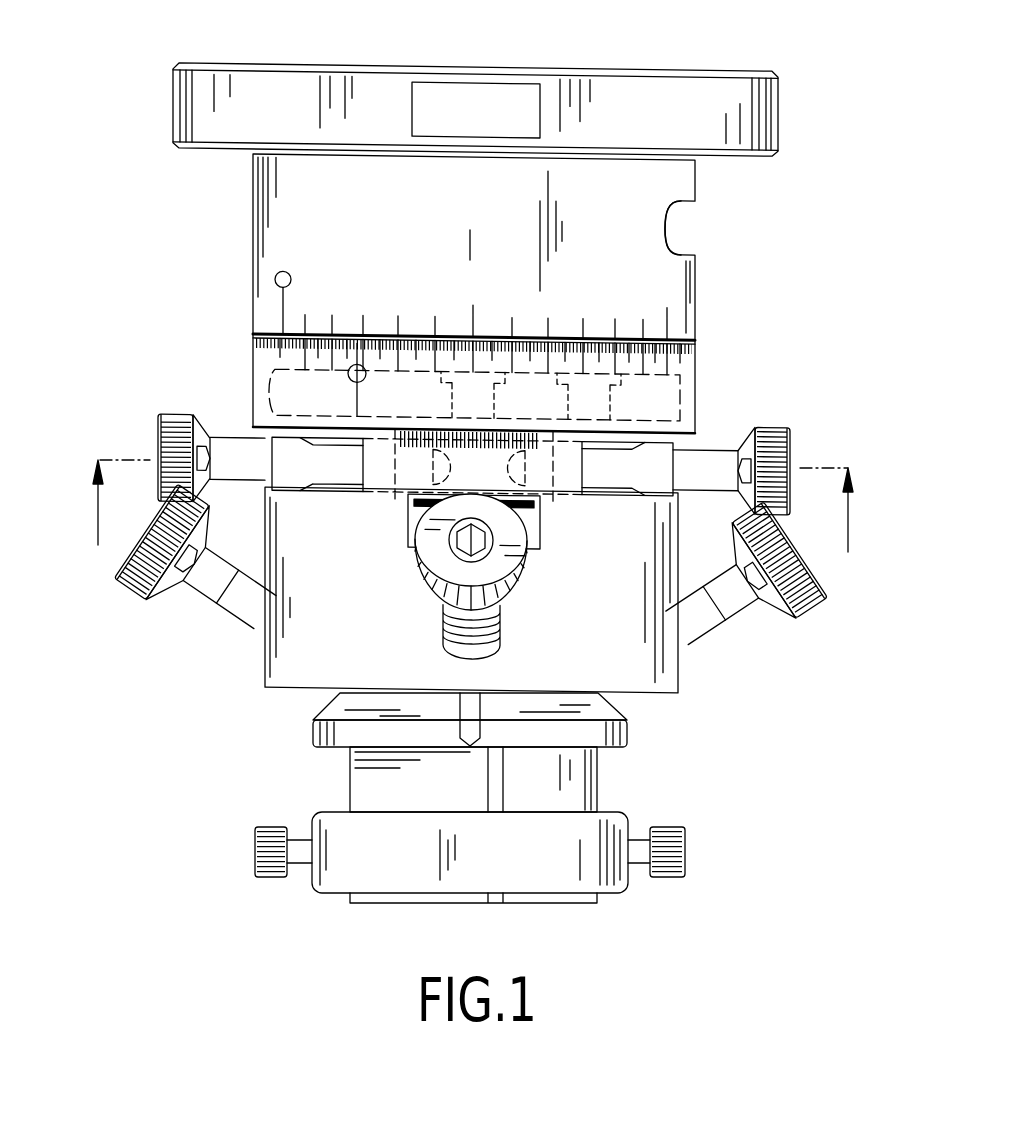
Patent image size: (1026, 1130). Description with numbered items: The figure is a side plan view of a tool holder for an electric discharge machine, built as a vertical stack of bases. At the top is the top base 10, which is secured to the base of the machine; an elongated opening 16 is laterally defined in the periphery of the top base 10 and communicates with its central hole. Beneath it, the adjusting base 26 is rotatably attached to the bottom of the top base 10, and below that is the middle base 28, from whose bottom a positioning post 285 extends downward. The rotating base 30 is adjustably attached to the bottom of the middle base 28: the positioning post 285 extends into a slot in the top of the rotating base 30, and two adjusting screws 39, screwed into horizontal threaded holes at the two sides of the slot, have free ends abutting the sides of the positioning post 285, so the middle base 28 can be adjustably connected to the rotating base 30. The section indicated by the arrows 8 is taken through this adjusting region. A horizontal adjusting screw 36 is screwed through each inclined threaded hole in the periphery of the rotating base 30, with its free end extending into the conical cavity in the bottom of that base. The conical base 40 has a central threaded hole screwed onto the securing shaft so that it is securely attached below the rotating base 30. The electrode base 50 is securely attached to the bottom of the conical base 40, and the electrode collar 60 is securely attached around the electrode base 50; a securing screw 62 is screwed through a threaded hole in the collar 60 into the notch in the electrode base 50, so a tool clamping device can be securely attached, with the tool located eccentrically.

The top base 10 is at (672, 88).
The elongated opening 16 is at (690, 233).
The adjusting base 26 is at (690, 368).
The middle base 28 is at (668, 402).
The adjusting screws 39 is at (765, 432).
The positioning post 285 is at (530, 519).
The section line 8 is at (462, 508).
The horizontal adjusting screw 36 is at (793, 612).
The rotating base 30 is at (678, 670).
The conical base 40 is at (608, 712).
The electrode base 50 is at (597, 775).
The electrode collar 60 is at (608, 885).
The securing screw 62 is at (687, 852).